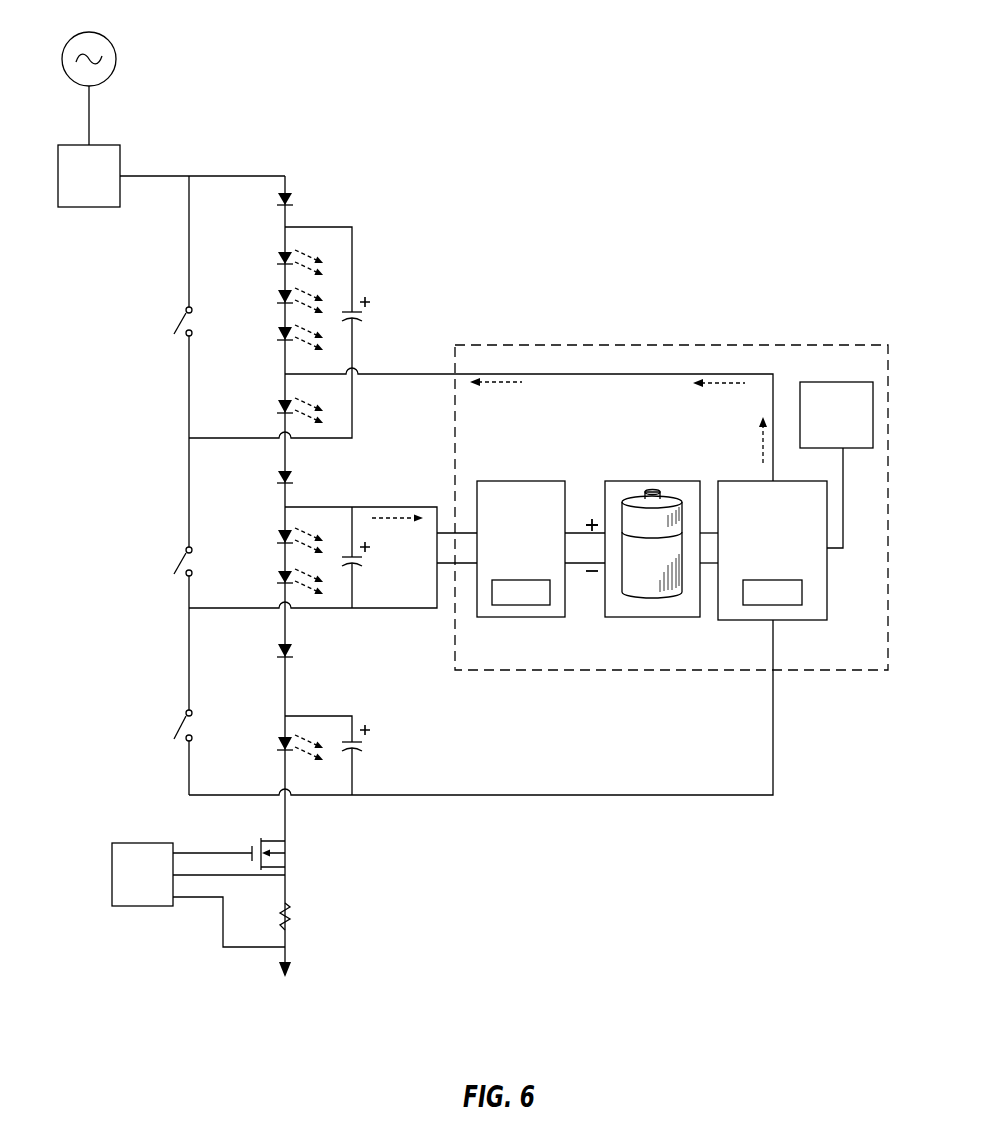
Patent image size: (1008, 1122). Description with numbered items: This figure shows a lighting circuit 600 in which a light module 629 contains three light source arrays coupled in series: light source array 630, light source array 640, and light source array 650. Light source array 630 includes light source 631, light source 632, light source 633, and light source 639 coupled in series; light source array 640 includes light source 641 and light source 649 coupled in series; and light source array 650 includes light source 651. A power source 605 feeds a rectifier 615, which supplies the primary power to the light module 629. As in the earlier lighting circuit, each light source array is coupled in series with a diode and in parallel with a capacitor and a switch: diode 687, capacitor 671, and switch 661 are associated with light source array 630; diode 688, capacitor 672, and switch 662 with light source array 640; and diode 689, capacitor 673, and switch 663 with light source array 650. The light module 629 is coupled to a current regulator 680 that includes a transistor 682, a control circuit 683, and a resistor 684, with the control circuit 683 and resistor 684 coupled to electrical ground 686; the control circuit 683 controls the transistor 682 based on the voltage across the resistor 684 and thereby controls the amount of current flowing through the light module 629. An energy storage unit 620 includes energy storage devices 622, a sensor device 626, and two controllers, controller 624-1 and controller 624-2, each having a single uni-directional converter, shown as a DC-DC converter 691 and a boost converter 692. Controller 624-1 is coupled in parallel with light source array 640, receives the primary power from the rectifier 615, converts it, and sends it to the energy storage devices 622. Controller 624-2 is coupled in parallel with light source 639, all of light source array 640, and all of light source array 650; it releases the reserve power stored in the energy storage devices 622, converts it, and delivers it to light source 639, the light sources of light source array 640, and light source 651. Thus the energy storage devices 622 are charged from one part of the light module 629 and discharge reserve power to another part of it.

The lighting circuit 600 is at (720, 67).
The AC power source 605 is at (98, 33).
The rectifier 615 is at (108, 188).
The energy storage unit 620 is at (822, 672).
The energy storage devices 622 is at (641, 481).
The controller 624-1 is at (521, 543).
The controller 624-2 is at (736, 543).
The sensor device 626 is at (827, 381).
The light module 629 is at (360, 145).
The light source array 630 is at (481, 341).
The light source 631 is at (283, 252).
The light source 632 is at (283, 290).
The light source 633 is at (283, 327).
The light source 639 is at (283, 400).
The light source array 640 is at (333, 543).
The light source 641 is at (283, 530).
The light source 649 is at (283, 571).
The light source array 650 is at (481, 707).
The light source 651 is at (283, 737).
The switch 661 is at (176, 322).
The switch 662 is at (176, 562).
The switch 663 is at (176, 726).
The capacitor 671 is at (358, 322).
The capacitor 672 is at (358, 567).
The capacitor 673 is at (358, 752).
The current driver 680 is at (136, 815).
The transistor 682 is at (288, 858).
The controller 683 is at (160, 886).
The resistor 684 is at (288, 916).
The output to ground 686 is at (290, 973).
The diode 687 is at (295, 200).
The diode 688 is at (295, 478).
The diode 689 is at (295, 651).
The DC-DC converter 691 is at (515, 603).
The boost converter 692 is at (752, 603).